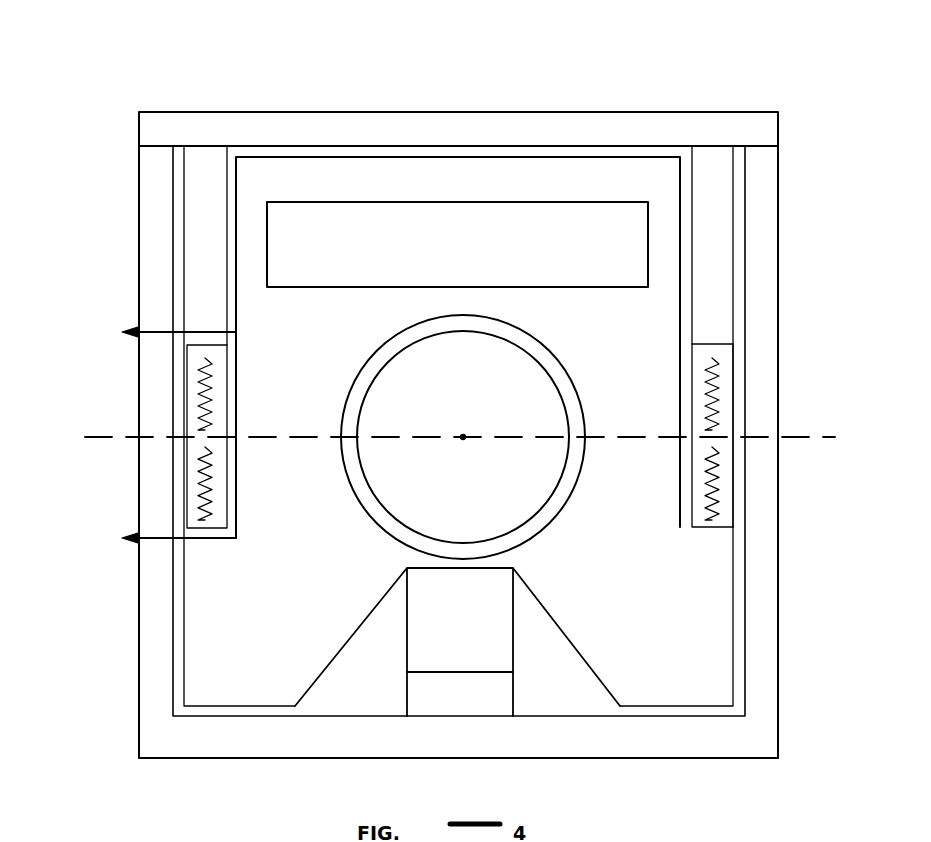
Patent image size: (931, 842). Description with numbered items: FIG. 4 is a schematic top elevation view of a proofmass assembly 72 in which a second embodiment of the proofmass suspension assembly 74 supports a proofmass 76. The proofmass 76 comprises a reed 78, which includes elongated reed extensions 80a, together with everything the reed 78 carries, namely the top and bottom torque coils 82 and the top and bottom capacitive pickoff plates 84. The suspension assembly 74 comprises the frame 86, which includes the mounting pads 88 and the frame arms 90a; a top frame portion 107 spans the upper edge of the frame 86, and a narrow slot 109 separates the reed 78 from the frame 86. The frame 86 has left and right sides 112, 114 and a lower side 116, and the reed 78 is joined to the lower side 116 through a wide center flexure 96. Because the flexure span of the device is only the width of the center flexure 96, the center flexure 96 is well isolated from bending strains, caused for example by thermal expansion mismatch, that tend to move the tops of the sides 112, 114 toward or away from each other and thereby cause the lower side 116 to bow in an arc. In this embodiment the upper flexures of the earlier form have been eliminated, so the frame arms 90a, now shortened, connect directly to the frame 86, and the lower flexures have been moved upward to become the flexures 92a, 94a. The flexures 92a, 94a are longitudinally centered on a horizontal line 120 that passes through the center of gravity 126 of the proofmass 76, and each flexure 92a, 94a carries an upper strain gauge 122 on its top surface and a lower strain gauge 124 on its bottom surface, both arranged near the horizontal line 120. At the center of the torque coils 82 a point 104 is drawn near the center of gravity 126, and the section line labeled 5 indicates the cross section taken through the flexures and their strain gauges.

The proofmass assembly 72 is at (171, 52).
The proofmass suspension assembly 74 is at (137, 80).
The proofmass 76 is at (113, 115).
The frame 86 is at (300, 80).
The top frame portion 107 is at (551, 122).
The slot 109 is at (398, 150).
The mounting pads 88 is at (147, 222).
The frame arms 90a is at (195, 268).
The reed 78 is at (247, 298).
The section line 5- 5 is at (168, 436).
The upper strain gauge 122 is at (207, 380).
The horizontal line 120 is at (100, 437).
The flexure 92a is at (187, 455).
The flexure 94a is at (725, 452).
The lower strain gauge 124 is at (197, 493).
The reed extensions 80a is at (195, 575).
The left side of frame 112 is at (152, 621).
The right side of frame 114 is at (770, 626).
The lower side of frame 116 is at (618, 750).
The capacitive pickoff plates 84 is at (585, 270).
The torque coils 82 is at (553, 512).
The lamp envelope 104 is at (463, 437).
The center of gravity 126 is at (463, 437).
The center flexure 96 is at (513, 648).